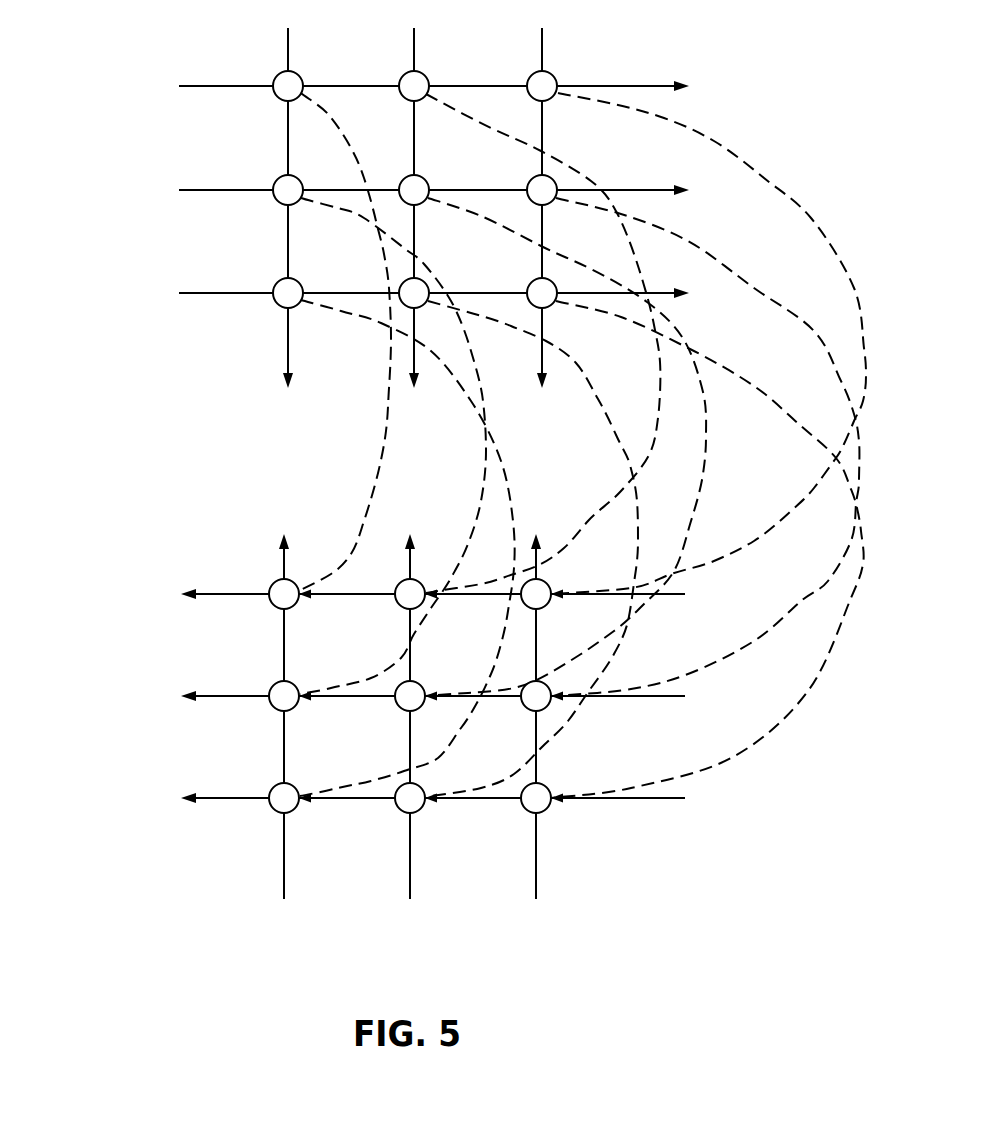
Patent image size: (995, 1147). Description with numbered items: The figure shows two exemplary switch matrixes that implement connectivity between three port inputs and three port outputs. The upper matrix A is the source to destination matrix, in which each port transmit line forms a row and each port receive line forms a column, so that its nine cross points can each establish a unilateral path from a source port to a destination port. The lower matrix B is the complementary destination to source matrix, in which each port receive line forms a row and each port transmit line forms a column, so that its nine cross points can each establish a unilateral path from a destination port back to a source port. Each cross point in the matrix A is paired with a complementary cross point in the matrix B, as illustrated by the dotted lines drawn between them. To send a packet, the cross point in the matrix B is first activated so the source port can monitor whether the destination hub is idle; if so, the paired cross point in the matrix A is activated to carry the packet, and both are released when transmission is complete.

The source to destination switch matrix A is at (363, 225).
The destination to source switch matrix B is at (360, 730).